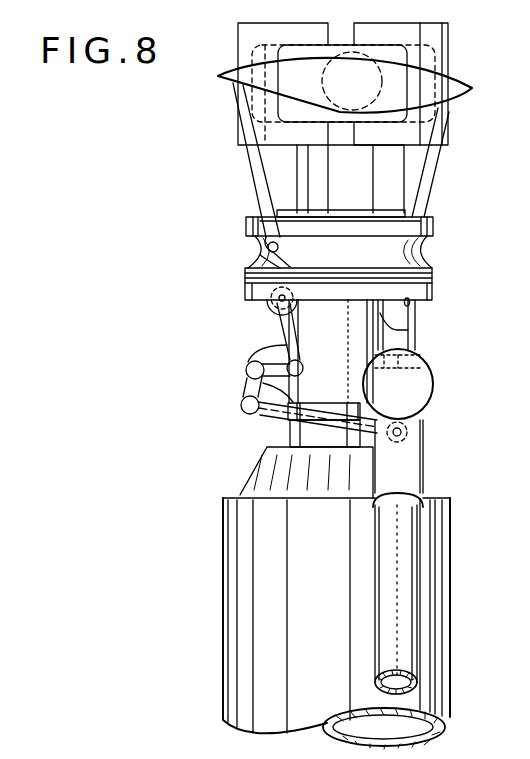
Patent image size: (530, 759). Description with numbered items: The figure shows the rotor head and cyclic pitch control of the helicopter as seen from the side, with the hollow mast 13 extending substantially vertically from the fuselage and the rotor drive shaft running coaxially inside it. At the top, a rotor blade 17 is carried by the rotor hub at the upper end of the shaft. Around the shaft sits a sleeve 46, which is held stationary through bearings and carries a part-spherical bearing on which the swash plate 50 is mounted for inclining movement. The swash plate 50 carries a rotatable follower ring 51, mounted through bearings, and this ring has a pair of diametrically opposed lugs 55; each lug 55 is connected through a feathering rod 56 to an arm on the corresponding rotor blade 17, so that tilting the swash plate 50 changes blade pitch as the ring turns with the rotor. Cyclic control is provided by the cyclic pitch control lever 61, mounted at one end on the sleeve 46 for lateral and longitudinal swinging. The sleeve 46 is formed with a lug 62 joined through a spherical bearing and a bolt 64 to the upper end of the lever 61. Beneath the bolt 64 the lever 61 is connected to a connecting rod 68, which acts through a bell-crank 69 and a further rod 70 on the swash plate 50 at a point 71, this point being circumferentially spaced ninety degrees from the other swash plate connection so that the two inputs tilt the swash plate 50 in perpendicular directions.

The hollow mast 13 is at (430, 517).
The rotor blade 17 is at (453, 97).
The sleeve 46 is at (358, 327).
The swash plate 50 is at (418, 290).
The follower ring 51 is at (430, 250).
The lug 55 is at (250, 265).
The feathering rod 56 is at (422, 173).
The cyclic pitch control lever 61 is at (402, 560).
The lug 62 is at (402, 360).
The bolt 64 is at (433, 373).
The connecting rod 68 is at (275, 415).
The bell-crank 69 is at (242, 388).
The rod 70 is at (291, 333).
The point 71 is at (272, 310).